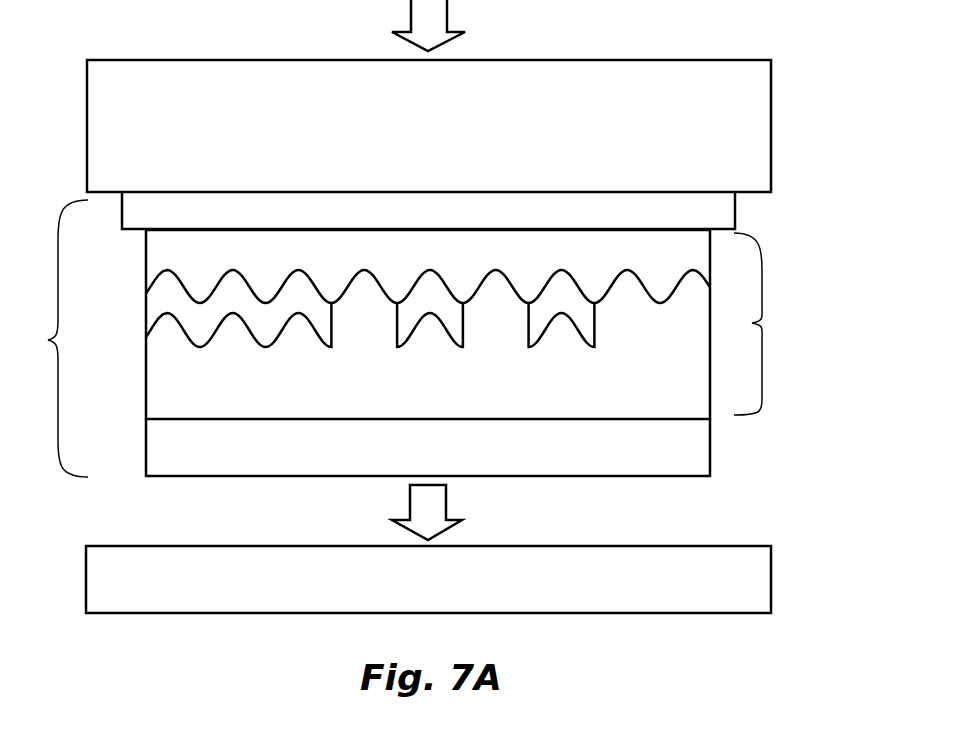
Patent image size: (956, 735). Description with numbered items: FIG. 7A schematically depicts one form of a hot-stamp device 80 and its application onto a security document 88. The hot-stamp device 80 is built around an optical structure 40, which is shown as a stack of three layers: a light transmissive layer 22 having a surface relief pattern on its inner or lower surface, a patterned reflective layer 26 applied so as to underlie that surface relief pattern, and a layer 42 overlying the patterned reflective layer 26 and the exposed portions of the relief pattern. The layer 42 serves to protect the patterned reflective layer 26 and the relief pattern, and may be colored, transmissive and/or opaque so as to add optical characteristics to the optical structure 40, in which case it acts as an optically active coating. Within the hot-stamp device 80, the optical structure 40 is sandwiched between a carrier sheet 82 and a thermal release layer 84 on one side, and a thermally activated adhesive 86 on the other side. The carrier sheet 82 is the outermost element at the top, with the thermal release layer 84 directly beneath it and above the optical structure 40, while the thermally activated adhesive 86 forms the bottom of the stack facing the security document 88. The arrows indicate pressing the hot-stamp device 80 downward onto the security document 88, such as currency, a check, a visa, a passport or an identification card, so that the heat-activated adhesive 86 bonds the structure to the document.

The carrier sheet 82 is at (740, 128).
The thermal release layer 84 is at (710, 208).
The light transmissive layer 22 is at (172, 250).
The patterned reflective layer 26 is at (168, 300).
The layer 42 is at (165, 380).
The optical structure 40 is at (761, 324).
The hot-stamp device 80 is at (54, 338).
The thermally activated adhesive 86 is at (695, 447).
The security document 88 is at (740, 578).